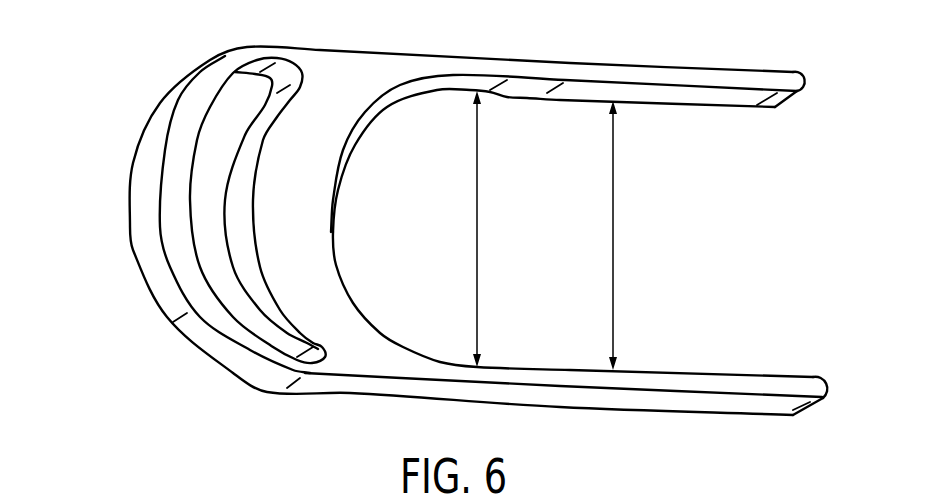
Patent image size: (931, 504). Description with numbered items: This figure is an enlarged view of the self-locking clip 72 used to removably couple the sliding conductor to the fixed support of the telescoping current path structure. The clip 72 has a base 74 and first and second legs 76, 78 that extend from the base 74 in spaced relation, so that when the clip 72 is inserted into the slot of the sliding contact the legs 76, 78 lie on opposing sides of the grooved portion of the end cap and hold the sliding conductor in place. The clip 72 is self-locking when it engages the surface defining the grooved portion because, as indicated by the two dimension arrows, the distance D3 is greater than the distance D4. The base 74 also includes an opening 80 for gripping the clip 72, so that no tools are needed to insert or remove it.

The self-locking clip 72 is at (106, 133).
The base 74 is at (327, 87).
The first leg 76 is at (700, 93).
The second leg 78 is at (707, 380).
The opening 80 is at (200, 190).
The distance D3 is at (478, 225).
The distance D4 is at (614, 225).